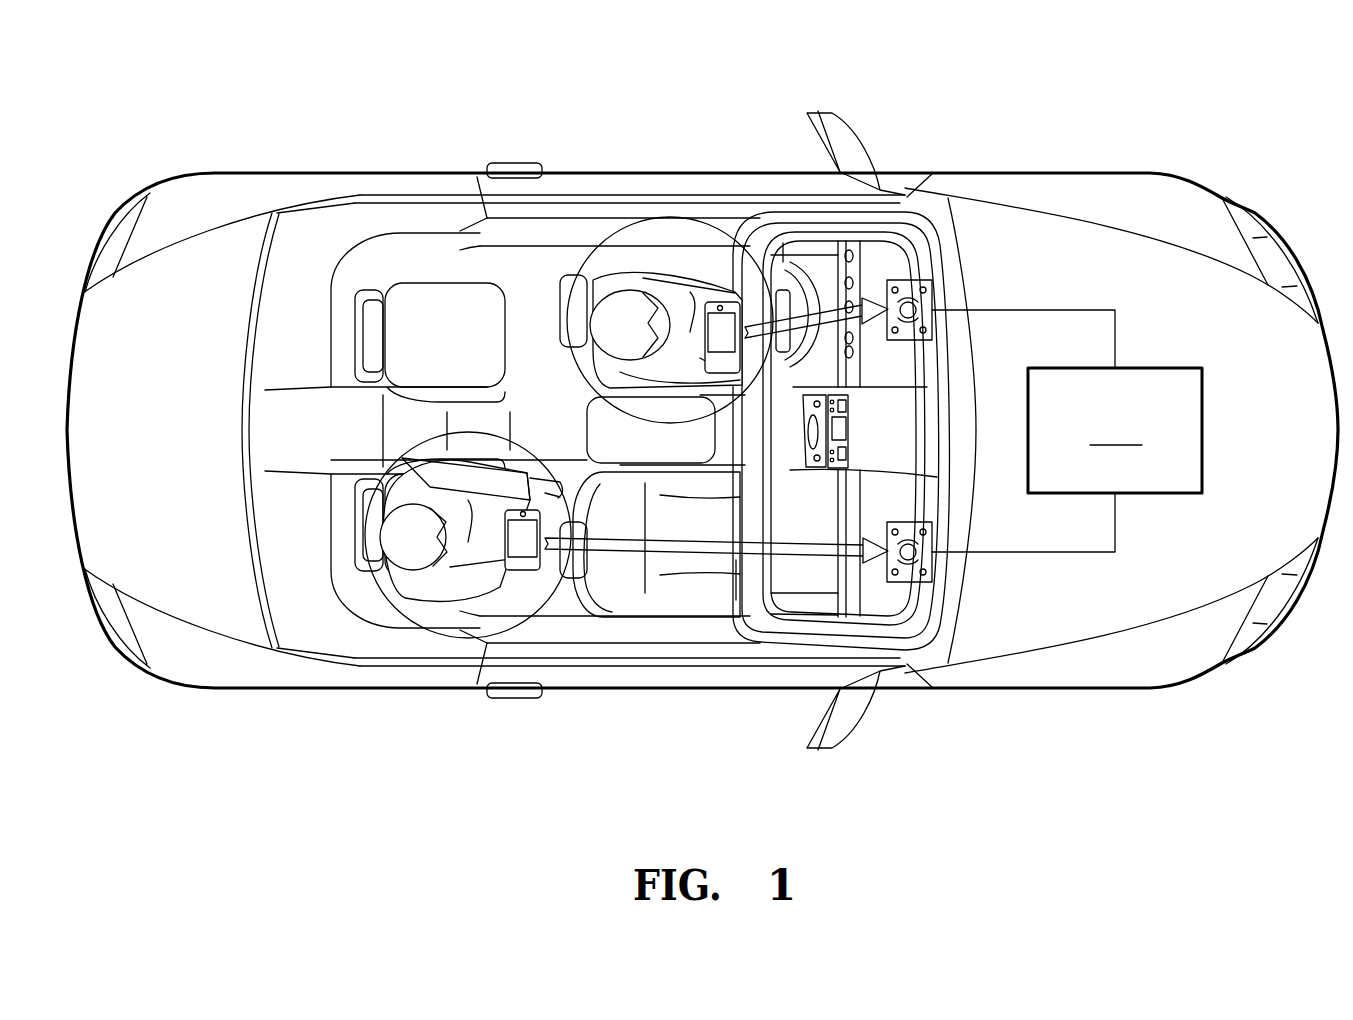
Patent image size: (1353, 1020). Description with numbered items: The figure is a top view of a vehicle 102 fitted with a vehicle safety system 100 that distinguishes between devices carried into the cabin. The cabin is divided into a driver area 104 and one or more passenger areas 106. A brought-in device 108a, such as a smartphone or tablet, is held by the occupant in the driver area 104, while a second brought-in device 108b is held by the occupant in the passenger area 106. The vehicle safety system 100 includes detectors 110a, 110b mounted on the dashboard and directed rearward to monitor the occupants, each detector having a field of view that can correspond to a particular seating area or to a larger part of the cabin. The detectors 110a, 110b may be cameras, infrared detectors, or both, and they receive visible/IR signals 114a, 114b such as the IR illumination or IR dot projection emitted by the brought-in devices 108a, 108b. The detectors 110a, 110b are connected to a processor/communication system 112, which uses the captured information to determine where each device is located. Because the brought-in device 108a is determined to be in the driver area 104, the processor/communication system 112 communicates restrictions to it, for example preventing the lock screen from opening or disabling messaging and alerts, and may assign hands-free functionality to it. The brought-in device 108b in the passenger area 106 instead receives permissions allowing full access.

The vehicle safety system 100 is at (1026, 350).
The vehicle 102 is at (220, 168).
The driver area 104 is at (618, 240).
The passenger area 106 is at (410, 625).
The brought-in device 108a is at (712, 302).
The brought-in device 108b is at (533, 550).
The detector 110a is at (918, 285).
The detector 110b is at (920, 588).
The processor/communication system 112 is at (1115, 430).
The visible/IR signal 114a is at (840, 300).
The second sensor 114b is at (736, 570).